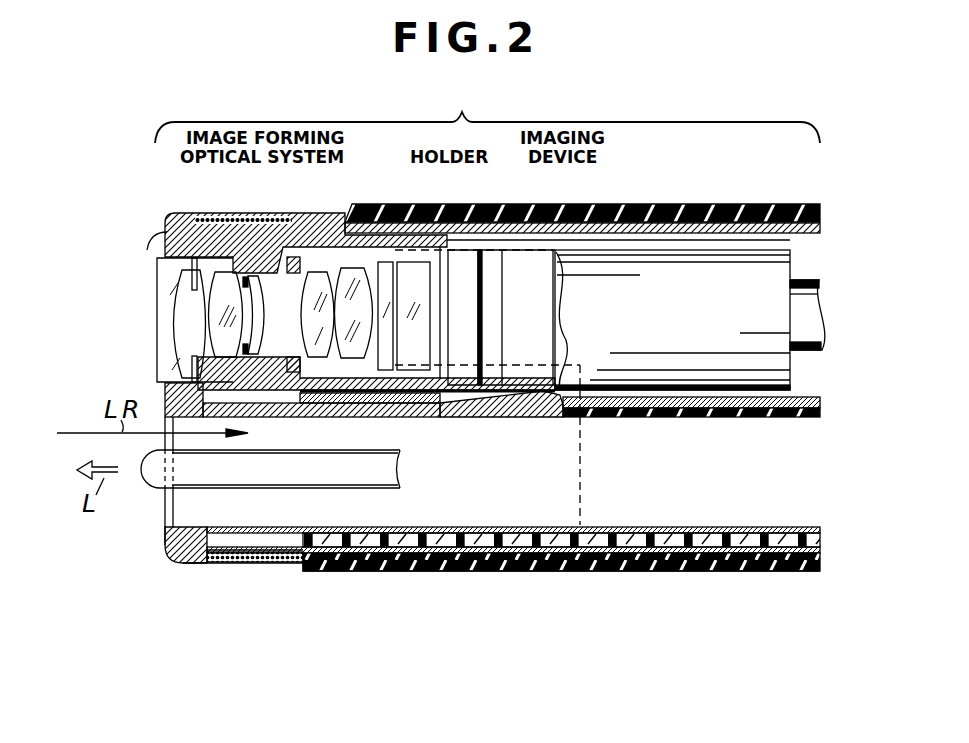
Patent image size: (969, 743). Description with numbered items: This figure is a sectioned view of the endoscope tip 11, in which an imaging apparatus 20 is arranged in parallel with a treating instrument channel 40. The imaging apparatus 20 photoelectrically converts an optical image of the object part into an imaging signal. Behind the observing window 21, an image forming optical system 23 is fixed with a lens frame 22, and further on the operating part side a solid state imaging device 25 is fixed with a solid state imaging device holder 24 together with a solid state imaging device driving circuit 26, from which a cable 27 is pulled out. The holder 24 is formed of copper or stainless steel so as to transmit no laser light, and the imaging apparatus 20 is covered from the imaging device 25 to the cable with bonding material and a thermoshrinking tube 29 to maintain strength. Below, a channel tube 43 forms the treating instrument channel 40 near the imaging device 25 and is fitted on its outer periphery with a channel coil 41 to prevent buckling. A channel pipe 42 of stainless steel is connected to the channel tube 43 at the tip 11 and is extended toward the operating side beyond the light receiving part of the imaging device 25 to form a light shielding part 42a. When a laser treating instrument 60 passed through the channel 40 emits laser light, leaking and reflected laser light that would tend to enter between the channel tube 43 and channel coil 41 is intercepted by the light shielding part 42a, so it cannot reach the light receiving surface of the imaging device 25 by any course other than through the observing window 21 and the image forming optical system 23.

The imaging apparatus 20 is at (487, 110).
The observing window 21 is at (172, 352).
The lens frame 22 is at (205, 271).
The image forming optical system 23 is at (273, 212).
The solid state imaging device holder 24 is at (445, 235).
The solid state imaging device 25 is at (487, 272).
The solid state imaging device driving circuit 26 is at (663, 277).
The cable 27 is at (807, 293).
The thermoshrinking tube 29 is at (753, 243).
The tip 11 is at (195, 570).
The treating instrument channel 40 is at (185, 510).
The channel coil 41 is at (634, 535).
The channel pipe 42 is at (353, 562).
The light shielding part 42a is at (545, 420).
The channel tube 43 is at (735, 553).
The laser treating instrument 60 is at (270, 473).